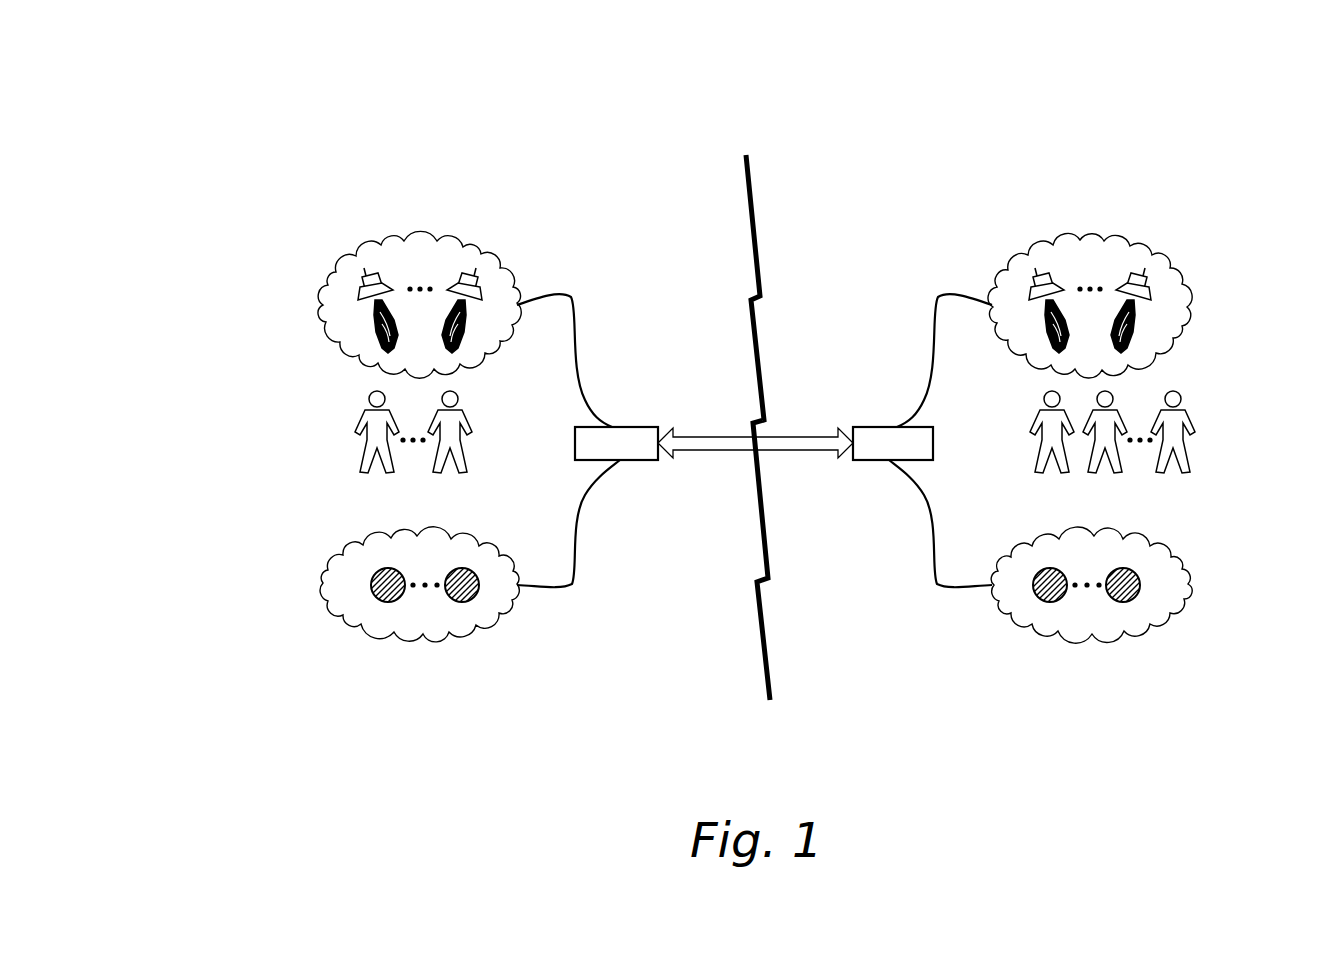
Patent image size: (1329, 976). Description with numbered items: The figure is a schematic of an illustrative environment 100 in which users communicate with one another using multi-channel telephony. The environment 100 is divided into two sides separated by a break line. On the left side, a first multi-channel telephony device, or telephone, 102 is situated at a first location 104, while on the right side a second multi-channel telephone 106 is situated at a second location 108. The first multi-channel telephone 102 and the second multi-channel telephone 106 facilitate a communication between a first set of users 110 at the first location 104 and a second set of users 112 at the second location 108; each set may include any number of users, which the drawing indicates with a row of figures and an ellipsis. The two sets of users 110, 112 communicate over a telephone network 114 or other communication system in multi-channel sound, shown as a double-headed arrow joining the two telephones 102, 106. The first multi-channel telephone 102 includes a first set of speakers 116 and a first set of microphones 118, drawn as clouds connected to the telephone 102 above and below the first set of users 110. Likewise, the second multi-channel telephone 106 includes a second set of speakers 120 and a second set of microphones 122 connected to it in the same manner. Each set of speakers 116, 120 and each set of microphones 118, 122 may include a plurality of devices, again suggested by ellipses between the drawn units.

The environment 100 is at (228, 102).
The first multi-channel telephony device 102 is at (633, 460).
The first location 104 is at (598, 128).
The second multi-channel telephone 106 is at (878, 460).
The second location 108 is at (870, 128).
The first set of users 110 is at (306, 413).
The second set of users 112 is at (1232, 413).
The telephone network 114 is at (723, 437).
The first set of speakers 116 is at (308, 260).
The first set of microphones 118 is at (306, 563).
The second set of speakers 120 is at (1205, 258).
The second set of microphones 122 is at (1208, 563).